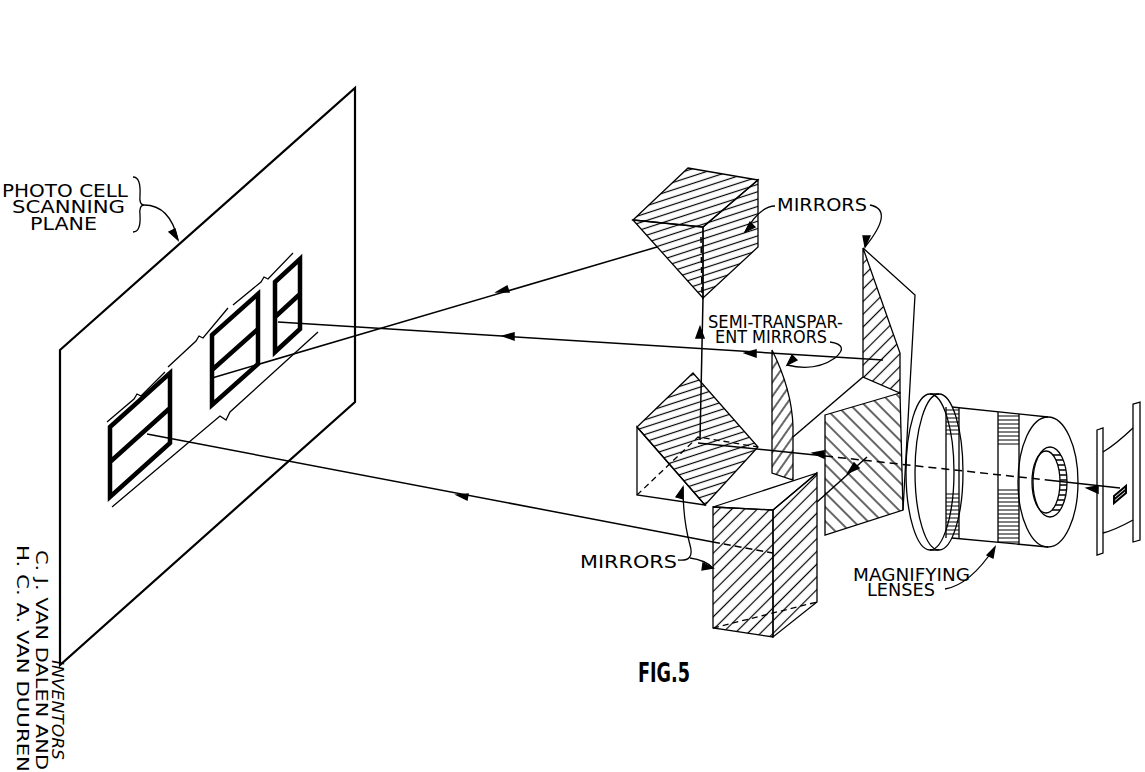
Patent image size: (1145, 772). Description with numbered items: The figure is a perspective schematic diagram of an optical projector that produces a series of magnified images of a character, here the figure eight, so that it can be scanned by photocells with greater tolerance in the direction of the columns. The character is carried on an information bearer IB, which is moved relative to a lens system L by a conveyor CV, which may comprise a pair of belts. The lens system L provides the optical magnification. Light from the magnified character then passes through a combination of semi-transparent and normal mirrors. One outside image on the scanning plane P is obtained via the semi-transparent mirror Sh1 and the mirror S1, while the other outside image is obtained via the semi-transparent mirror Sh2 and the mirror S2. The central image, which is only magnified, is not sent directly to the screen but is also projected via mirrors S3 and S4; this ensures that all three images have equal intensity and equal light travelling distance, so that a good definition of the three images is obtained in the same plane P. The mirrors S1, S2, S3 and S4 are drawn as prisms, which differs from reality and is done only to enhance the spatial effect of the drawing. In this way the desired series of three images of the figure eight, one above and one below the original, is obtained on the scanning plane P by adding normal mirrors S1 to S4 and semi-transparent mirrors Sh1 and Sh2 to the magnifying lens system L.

The scanning plane P is at (347, 130).
The mirror S1 is at (716, 604).
The mirror S2 is at (866, 332).
The mirror S3 is at (729, 386).
The mirror S4 is at (678, 266).
The semi-transparent mirror Sh1 is at (857, 518).
The semi-transparent mirror Sh2 is at (799, 415).
The lens system L is at (1025, 415).
The information bearer IB is at (1071, 410).
The conveyor CV is at (1058, 516).